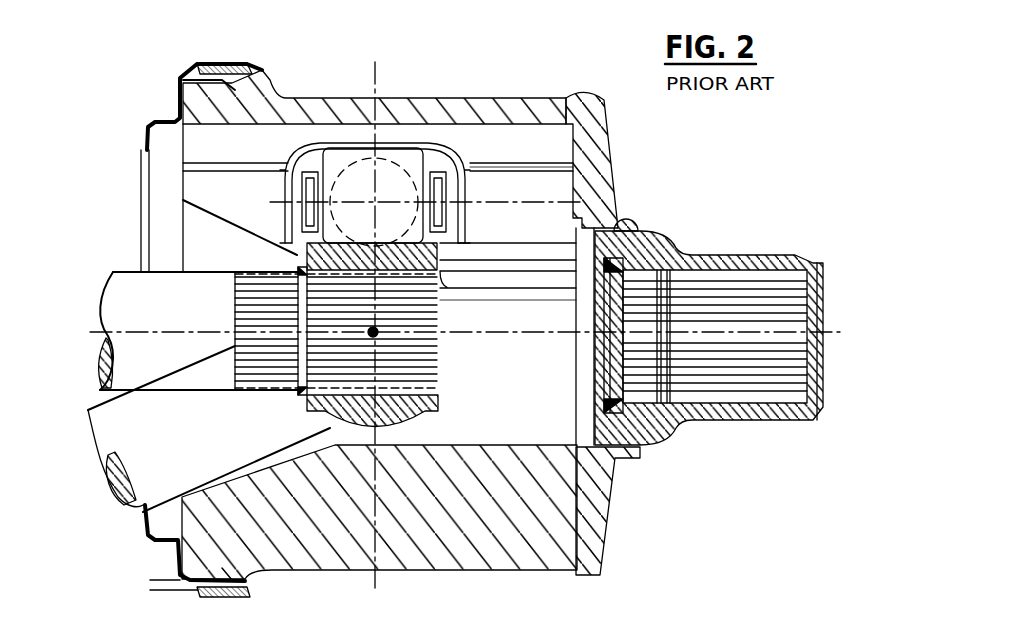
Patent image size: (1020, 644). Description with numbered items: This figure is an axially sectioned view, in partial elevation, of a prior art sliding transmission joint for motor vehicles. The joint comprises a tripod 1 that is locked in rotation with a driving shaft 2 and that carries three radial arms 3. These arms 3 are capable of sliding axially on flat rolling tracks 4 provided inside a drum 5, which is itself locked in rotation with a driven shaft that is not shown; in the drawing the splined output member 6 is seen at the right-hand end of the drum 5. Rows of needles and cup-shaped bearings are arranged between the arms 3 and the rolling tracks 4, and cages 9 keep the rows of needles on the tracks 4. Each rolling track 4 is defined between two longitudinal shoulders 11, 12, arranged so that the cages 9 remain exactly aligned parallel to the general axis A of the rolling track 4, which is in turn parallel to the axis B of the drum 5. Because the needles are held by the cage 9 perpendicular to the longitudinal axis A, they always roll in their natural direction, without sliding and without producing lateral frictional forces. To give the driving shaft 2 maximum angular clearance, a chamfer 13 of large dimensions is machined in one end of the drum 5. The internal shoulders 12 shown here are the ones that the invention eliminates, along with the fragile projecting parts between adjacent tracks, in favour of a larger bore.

The tripod 1 is at (422, 424).
The driving shaft 2 is at (176, 368).
The radial arms 3 is at (385, 185).
The rolling tracks 4 is at (521, 187).
The drum 5 is at (318, 95).
The splined output hub 6 is at (722, 263).
The cages 9 is at (433, 170).
The longitudinal shoulder 11 is at (549, 177).
The internal longitudinal shoulder 12 is at (540, 244).
The chamfer 13 is at (238, 236).
The general axis of the rolling track A is at (482, 197).
The axis of the drum B is at (532, 336).